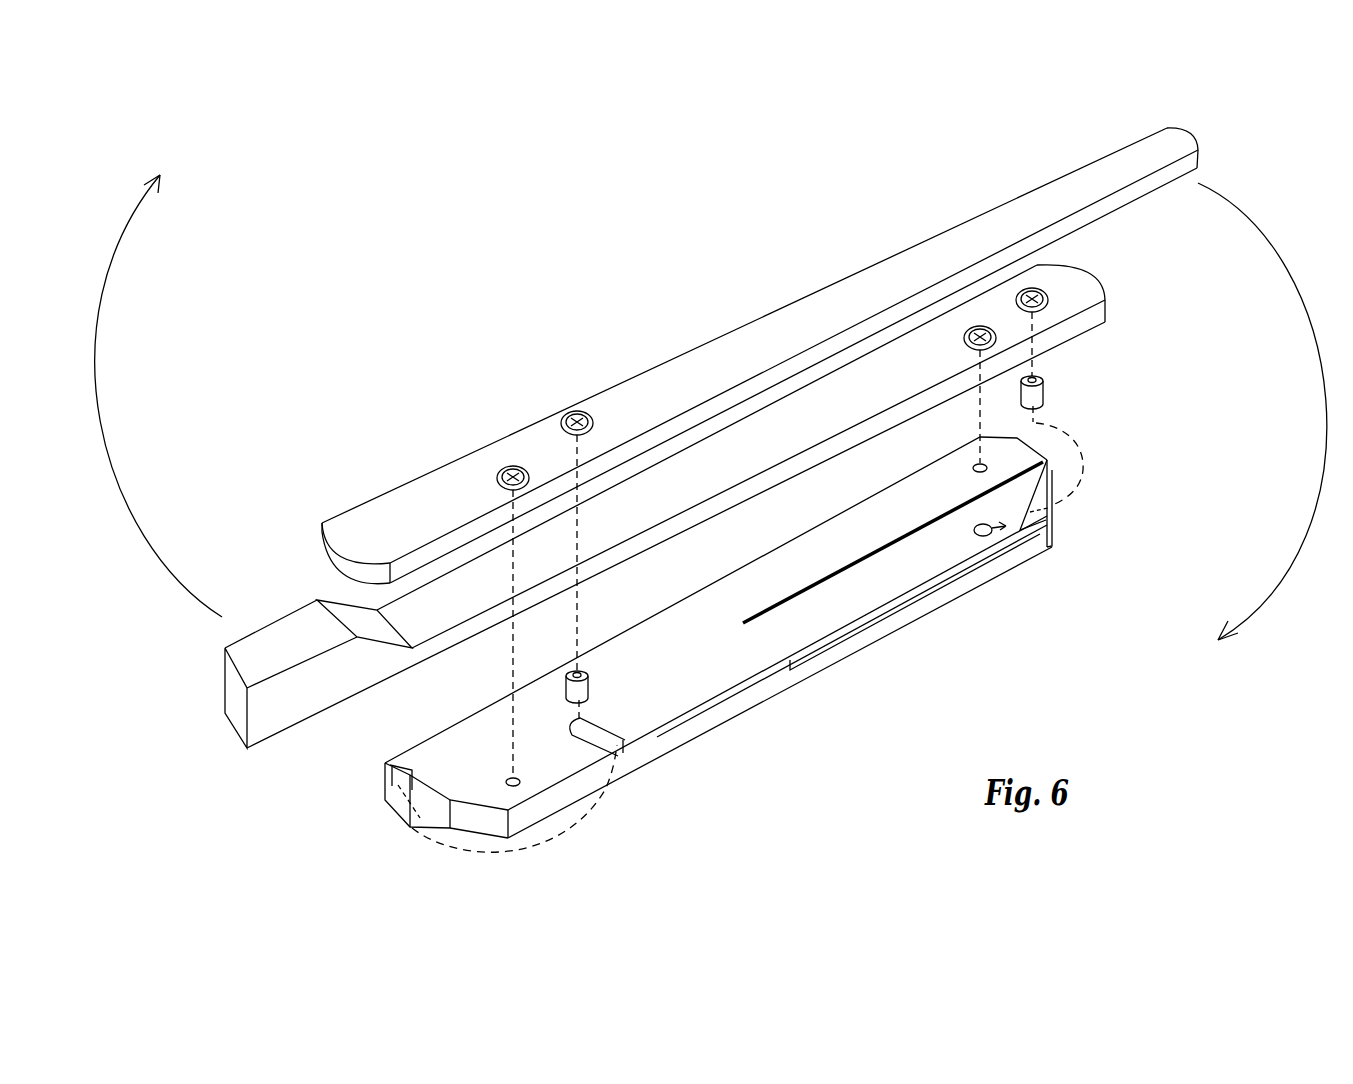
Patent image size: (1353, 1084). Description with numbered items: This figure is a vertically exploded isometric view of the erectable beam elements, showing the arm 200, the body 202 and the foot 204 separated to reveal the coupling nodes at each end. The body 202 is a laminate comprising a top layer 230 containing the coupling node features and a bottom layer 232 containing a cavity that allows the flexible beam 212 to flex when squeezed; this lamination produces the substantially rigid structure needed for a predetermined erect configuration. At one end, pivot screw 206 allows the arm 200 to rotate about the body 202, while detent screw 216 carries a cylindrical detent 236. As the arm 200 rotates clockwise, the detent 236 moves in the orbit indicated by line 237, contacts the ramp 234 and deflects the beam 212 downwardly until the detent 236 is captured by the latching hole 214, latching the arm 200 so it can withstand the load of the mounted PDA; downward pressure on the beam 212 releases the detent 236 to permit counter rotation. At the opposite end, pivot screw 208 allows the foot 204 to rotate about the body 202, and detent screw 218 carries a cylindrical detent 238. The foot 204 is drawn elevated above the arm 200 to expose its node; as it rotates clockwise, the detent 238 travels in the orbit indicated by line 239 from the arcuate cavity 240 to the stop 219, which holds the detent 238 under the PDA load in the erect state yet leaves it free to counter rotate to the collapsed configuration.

The arm 200 is at (850, 395).
The body 202 is at (726, 662).
The foot 204 is at (750, 345).
The pivot screw 206 is at (996, 338).
The pivot screw 208 is at (505, 468).
The flexible beam 212 is at (853, 597).
The latching hole 214 is at (985, 542).
The detent screw 216 is at (1042, 294).
The detent screw 218 is at (572, 412).
The stop 219 is at (395, 782).
The top layer 230 is at (713, 665).
The bottom layer 232 is at (708, 718).
The ramp 234 is at (1062, 505).
The cylindrical detent 236 is at (1047, 392).
The orbit line 237 is at (1088, 452).
The cylindrical detent 238 is at (590, 678).
The orbit line 239 is at (560, 848).
The arcuate cavity 240 is at (600, 745).